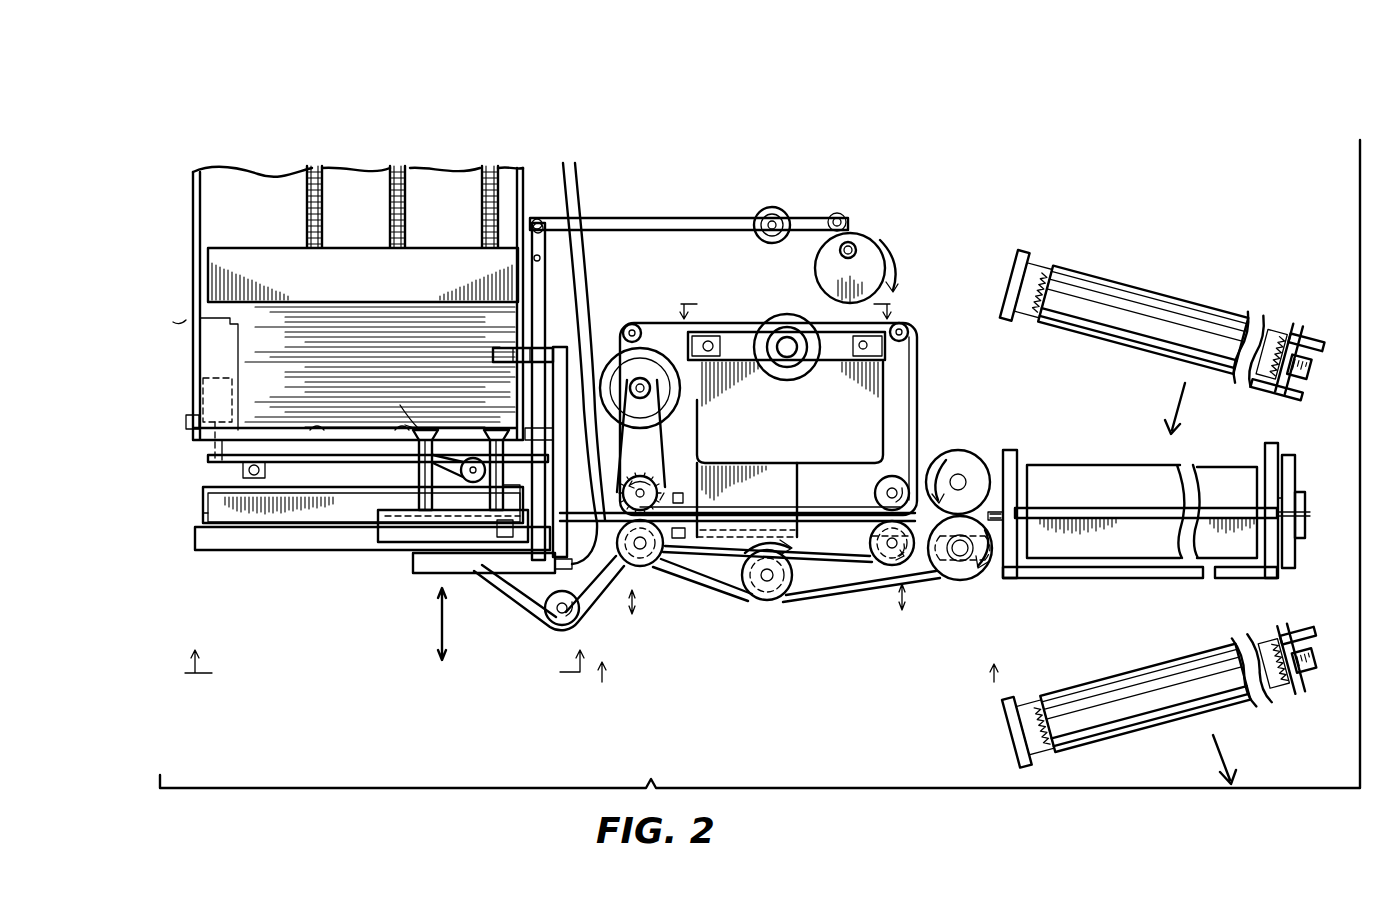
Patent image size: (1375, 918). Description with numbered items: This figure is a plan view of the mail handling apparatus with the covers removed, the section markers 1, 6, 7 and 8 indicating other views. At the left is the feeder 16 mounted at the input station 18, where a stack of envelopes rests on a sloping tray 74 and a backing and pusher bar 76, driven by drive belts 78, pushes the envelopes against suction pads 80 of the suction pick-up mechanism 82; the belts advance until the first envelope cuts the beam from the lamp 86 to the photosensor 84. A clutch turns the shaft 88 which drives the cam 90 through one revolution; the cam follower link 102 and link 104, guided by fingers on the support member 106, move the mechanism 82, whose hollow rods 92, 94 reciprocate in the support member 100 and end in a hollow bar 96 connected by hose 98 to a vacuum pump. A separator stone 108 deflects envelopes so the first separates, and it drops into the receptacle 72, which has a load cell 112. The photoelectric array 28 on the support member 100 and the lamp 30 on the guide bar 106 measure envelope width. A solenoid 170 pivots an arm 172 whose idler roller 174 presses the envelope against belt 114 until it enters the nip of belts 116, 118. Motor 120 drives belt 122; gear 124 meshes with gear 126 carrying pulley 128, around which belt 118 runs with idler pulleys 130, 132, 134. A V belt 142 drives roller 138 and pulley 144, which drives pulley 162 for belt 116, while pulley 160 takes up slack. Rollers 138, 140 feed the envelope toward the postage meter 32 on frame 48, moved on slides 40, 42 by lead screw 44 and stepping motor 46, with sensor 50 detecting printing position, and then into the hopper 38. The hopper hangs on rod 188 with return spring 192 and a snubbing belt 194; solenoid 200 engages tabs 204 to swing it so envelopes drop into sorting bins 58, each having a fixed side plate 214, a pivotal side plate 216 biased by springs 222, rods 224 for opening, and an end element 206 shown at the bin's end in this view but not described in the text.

The section line 1 is at (186, 492).
The section line 6 is at (785, 308).
The section line 7 is at (574, 647).
The section line 8 is at (798, 659).
The feeder 16 is at (470, 146).
The input station 18 is at (262, 558).
The photoelectric array 28 is at (500, 530).
The lamp 30 is at (497, 358).
The postage meter 32 is at (898, 411).
The hopper 38 is at (1102, 470).
The slide 40 is at (708, 340).
The slide 42 is at (868, 372).
The lead screw 44 is at (778, 336).
The stepping motor 46 is at (802, 328).
The frame 48 is at (758, 330).
The photoelectric sensor 50 is at (684, 498).
The sorting bins 58 is at (1174, 272).
The receptacle 72 is at (204, 512).
The tray 74 is at (250, 183).
The backing and pusher bar 76 is at (245, 258).
The drive belts 78 is at (488, 194).
The suction pads 80 is at (411, 408).
The suction pick-up mechanism 82 is at (392, 568).
The photosensor 84 is at (528, 364).
The lamp 86 is at (188, 430).
The shaft 88 is at (840, 250).
The cam 90 is at (858, 236).
The hollow rod 92 is at (418, 506).
The hollow rod 94 is at (492, 502).
The bar 96 is at (424, 570).
The hose 98 is at (572, 184).
The support member 100 is at (334, 552).
The cam follower link 102 is at (664, 218).
The link 104 is at (546, 282).
The support member 106 is at (560, 350).
The separator stone 108 is at (528, 428).
The load cell 112 is at (205, 492).
The belt 114 is at (504, 598).
The belt 116 is at (838, 598).
The belt 118 is at (912, 344).
The motor 120 is at (680, 390).
The belt 122 is at (660, 445).
The gear 124 is at (654, 568).
The gear 126 is at (655, 472).
The pulley 128 is at (658, 492).
The idler pulley 130 is at (878, 487).
The idler pulley 132 is at (907, 326).
The idler pulley 134 is at (630, 324).
The roller 138 is at (950, 580).
The roller 140 is at (962, 432).
The belt 142 is at (860, 562).
The pulley 144 is at (742, 604).
The pulley 160 is at (554, 622).
The pulley 162 is at (768, 602).
The solenoid 170 is at (202, 372).
The arm 172 is at (328, 462).
The idler roller 174 is at (460, 470).
The rod 188 is at (1106, 510).
The return spring 192 is at (998, 568).
The belt 194 is at (1290, 474).
The solenoid 200 is at (1306, 514).
The tabs 204 is at (1300, 362).
The end plate 206 is at (1250, 392).
The fixed side plate 214 is at (1070, 332).
The pivotal side plate 216 is at (1084, 270).
The springs 222 is at (1022, 732).
The rods 224 is at (1302, 326).